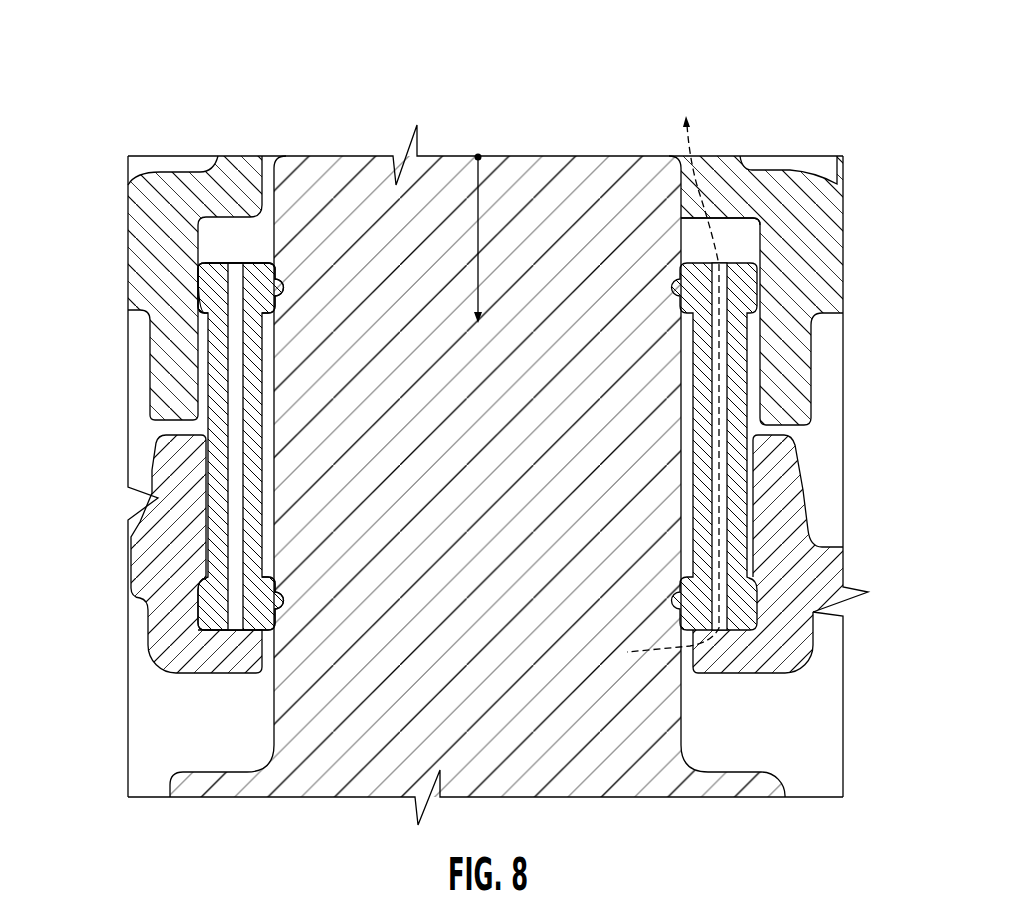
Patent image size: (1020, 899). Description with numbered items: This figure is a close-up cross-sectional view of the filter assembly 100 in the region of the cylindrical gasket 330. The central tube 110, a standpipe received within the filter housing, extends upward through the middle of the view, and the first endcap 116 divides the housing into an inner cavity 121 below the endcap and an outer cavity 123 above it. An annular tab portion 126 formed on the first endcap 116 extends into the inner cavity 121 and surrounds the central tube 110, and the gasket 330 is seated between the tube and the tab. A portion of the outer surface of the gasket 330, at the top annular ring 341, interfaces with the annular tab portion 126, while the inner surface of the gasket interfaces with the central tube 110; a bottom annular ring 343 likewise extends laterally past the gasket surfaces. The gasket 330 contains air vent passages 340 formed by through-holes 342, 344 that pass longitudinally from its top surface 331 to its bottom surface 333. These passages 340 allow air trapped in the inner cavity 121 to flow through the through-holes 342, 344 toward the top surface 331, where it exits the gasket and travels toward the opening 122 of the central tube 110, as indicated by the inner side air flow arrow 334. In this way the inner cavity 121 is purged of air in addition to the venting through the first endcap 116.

The filter assembly 100 is at (130, 68).
The central tube 110 is at (612, 172).
The first endcap 116 is at (832, 216).
The inner cavity 121 is at (144, 786).
The opening 122 is at (479, 155).
The outer cavity 123 is at (153, 156).
The annular tab portion 126 is at (793, 347).
The cylindrical gasket 330 is at (208, 468).
The top surface 331 is at (246, 285).
The bottom surface 333 is at (208, 632).
The inner side air flow arrow 334 is at (716, 236).
The air vent passages 340 is at (215, 549).
The top annular ring 341 is at (202, 292).
The through-hole 342 is at (200, 262).
The bottom annular ring 343 is at (200, 615).
The through-hole 344 is at (710, 263).